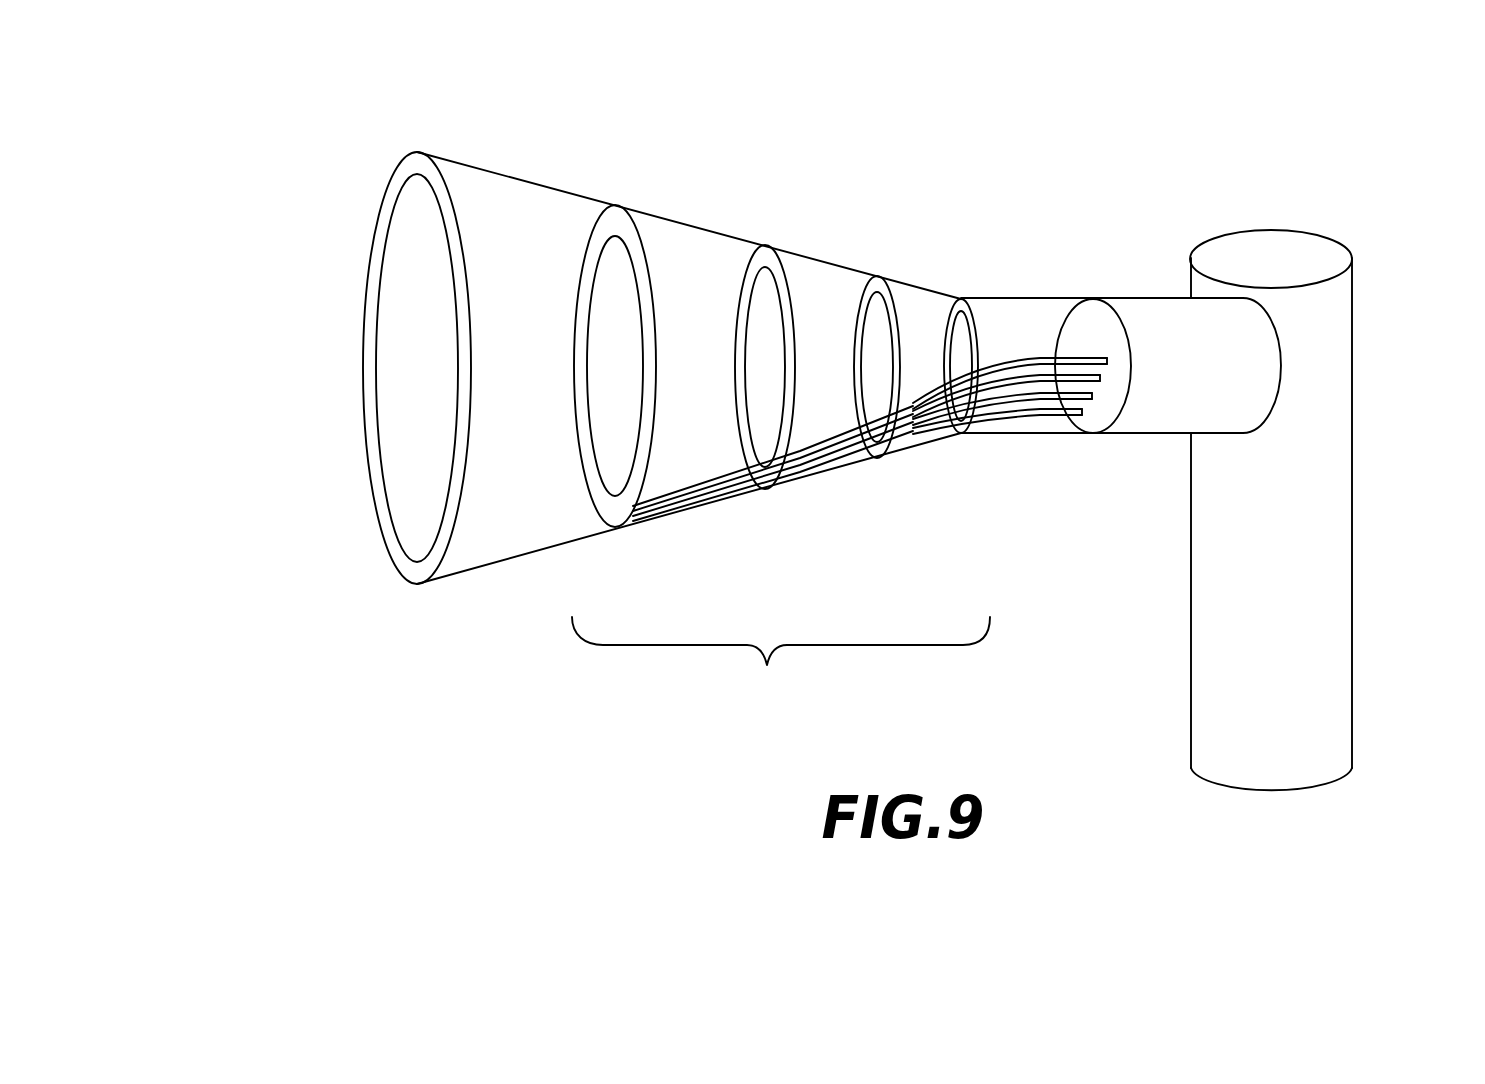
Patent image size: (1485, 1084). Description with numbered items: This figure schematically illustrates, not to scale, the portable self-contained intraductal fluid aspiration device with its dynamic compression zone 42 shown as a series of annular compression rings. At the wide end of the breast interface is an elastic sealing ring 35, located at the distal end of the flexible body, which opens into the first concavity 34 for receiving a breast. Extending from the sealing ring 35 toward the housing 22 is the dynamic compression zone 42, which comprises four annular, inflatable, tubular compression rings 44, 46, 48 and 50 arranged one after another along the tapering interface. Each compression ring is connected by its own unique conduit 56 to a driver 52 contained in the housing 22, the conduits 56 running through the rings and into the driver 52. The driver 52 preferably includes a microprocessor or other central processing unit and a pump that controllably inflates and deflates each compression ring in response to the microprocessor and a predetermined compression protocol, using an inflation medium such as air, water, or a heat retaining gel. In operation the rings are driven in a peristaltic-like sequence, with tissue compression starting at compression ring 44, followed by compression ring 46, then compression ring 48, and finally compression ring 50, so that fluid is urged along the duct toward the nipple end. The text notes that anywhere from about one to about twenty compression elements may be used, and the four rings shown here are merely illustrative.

The housing 22 is at (1313, 473).
The first concavity 34 is at (305, 298).
The elastic sealing ring 35 is at (417, 155).
The dynamic compression zone 42 is at (781, 657).
The compression ring 44 is at (638, 525).
The compression ring 46 is at (765, 245).
The compression ring 48 is at (880, 277).
The compression ring 50 is at (965, 298).
The driver 52 is at (1165, 337).
The conduit 56 is at (838, 445).